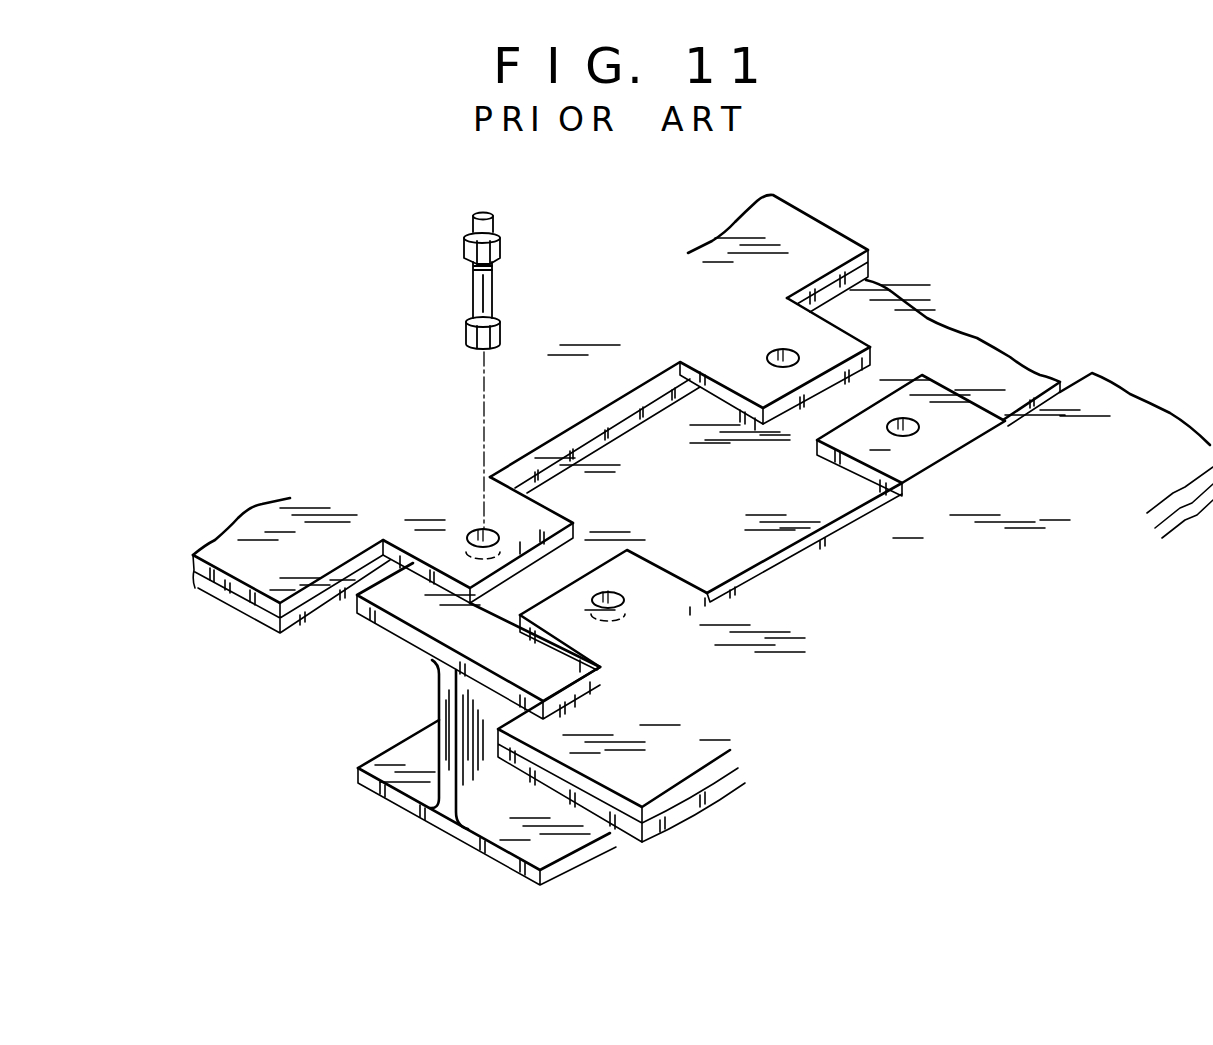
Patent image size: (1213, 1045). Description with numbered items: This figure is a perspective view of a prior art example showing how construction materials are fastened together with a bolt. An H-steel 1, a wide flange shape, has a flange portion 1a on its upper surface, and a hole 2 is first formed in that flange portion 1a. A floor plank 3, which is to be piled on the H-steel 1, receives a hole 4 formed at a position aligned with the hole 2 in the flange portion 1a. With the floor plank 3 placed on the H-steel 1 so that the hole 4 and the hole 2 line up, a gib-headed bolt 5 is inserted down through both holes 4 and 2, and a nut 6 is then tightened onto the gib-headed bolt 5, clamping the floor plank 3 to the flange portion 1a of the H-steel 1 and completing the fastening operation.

The H-steel 1 is at (447, 818).
The flange portion 1a is at (393, 607).
The hole 2 is at (470, 556).
The floor plank 3 is at (277, 523).
The hole 4 is at (476, 527).
The gib-headed bolt 5 is at (468, 336).
The nut 6 is at (467, 252).